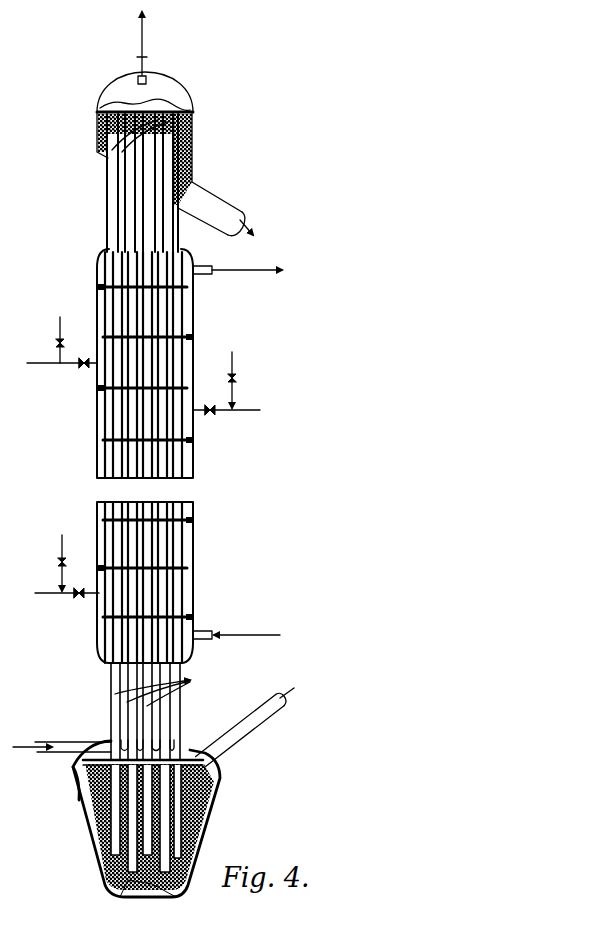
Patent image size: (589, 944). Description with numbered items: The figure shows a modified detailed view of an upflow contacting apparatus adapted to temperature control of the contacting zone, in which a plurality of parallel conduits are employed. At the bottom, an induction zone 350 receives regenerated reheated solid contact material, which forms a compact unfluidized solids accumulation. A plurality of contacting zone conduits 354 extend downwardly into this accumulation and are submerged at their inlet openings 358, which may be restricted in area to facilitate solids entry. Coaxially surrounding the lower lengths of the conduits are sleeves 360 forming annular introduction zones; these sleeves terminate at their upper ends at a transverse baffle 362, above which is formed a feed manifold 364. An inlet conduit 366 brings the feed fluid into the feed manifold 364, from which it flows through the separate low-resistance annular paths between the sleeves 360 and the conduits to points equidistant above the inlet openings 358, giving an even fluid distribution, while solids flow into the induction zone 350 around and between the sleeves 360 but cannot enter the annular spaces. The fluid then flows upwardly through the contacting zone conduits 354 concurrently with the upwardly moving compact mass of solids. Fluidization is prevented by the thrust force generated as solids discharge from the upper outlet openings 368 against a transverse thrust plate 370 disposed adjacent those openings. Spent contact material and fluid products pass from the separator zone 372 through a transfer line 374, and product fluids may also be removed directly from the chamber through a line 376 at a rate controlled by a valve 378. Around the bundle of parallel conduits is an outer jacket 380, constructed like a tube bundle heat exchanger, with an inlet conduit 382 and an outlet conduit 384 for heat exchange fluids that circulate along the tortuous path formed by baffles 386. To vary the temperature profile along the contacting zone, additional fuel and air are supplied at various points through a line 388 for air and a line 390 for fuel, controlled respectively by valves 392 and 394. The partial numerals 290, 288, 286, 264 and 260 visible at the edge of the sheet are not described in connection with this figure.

The induction zone 350 is at (218, 796).
The contacting zone conduits 354 is at (171, 690).
The inlet openings 358 is at (153, 895).
The sleeves 360 is at (173, 828).
The transverse baffle 362 is at (83, 770).
The feed manifold 364 is at (192, 750).
The inlet conduit 366 is at (38, 742).
The upper outlet openings 368 is at (104, 147).
The transverse thrust plate 370 is at (173, 111).
The separator zone 372 is at (158, 87).
The transfer line 374 is at (237, 201).
The line 376 is at (138, 58).
The valve 378 is at (142, 54).
The outer jacket 380 is at (194, 349).
The inlet conduit 382 is at (201, 630).
The outlet conduit 384 is at (203, 276).
The baffles 386 is at (122, 283).
The line for air 388 is at (45, 363).
The line for fuel 390 is at (72, 297).
The valve 392 is at (84, 368).
The valve 394 is at (56, 343).
The line (adjacent figure) 290 is at (0, 412).
The line (adjacent figure) 288 is at (0, 446).
The line (adjacent figure) 286 is at (0, 491).
The line (adjacent figure) 264 is at (0, 886).
The line (adjacent figure) 260 is at (14, 906).